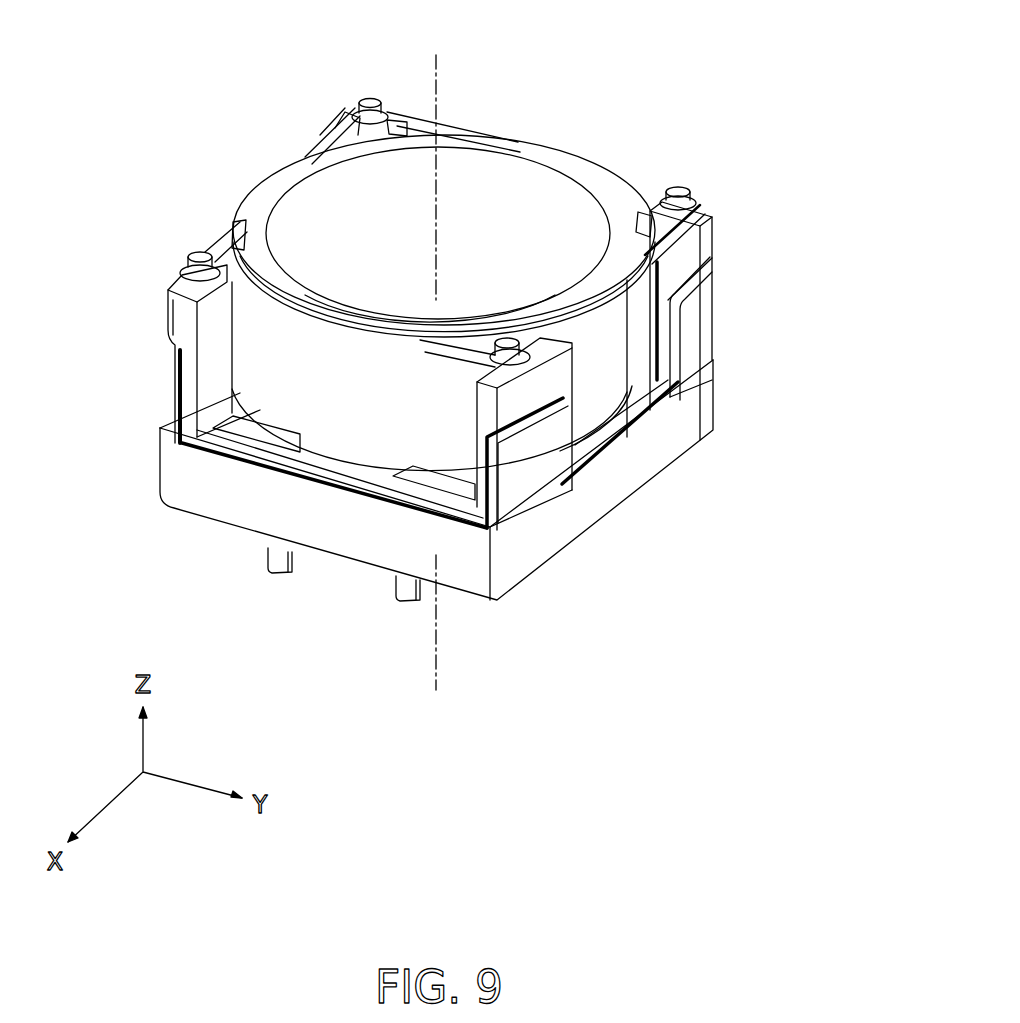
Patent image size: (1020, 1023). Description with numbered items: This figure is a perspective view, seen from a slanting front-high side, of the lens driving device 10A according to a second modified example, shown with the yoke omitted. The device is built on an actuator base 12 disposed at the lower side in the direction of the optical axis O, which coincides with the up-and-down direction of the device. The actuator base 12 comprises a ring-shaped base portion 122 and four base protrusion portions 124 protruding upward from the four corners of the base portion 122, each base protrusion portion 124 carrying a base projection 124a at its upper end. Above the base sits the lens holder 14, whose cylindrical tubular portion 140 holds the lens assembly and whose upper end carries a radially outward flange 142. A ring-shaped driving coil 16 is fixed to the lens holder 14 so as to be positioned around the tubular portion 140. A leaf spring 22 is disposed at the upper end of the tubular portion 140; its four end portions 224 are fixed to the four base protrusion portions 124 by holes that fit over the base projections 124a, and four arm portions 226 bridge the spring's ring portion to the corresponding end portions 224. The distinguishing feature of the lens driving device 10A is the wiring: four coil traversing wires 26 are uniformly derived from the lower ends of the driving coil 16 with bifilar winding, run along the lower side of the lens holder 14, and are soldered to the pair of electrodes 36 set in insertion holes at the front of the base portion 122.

The lens driving device 10A is at (632, 97).
The optical axis O is at (440, 78).
The actuator base 12 is at (652, 457).
The lens holder 14 is at (637, 186).
The driving coil 16 is at (597, 388).
The leaf spring 22 is at (203, 252).
The coil traversing wires 26 is at (236, 348).
The electrodes 36 is at (265, 555).
The base portion 122 is at (590, 512).
The base protrusion portions 124 is at (317, 137).
The base projections 124a is at (368, 93).
The tubular portion 140 is at (500, 182).
The flange 142 is at (593, 177).
The end portions 224 is at (350, 107).
The arm portions 226 is at (413, 108).